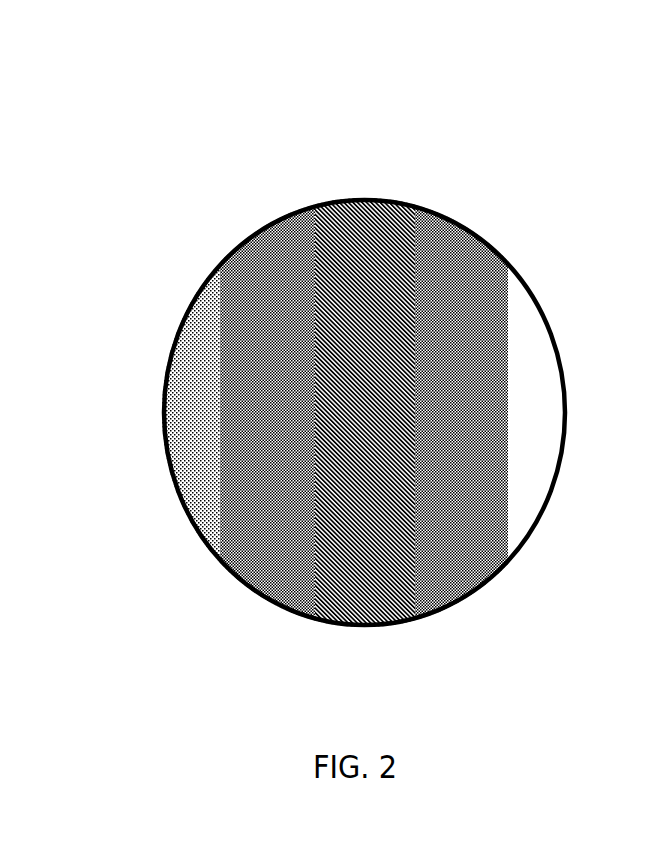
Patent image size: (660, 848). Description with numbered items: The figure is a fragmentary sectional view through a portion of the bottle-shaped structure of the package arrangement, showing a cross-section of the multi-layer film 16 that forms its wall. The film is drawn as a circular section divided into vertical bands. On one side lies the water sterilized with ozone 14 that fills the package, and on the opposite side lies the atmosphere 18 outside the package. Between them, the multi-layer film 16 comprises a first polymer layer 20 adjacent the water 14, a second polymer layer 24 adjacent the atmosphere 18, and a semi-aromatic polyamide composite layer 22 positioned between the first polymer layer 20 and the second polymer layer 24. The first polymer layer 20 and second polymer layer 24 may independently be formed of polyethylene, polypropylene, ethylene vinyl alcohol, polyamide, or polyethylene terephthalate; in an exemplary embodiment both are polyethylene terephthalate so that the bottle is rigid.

The water sterilized with ozone 14 is at (197, 408).
The multi-layer film 16 is at (526, 107).
The atmosphere 18 is at (540, 380).
The first polymer layer 20 is at (262, 285).
The semi-aromatic polyamide composite layer 22 is at (370, 258).
The second polymer layer 24 is at (455, 323).